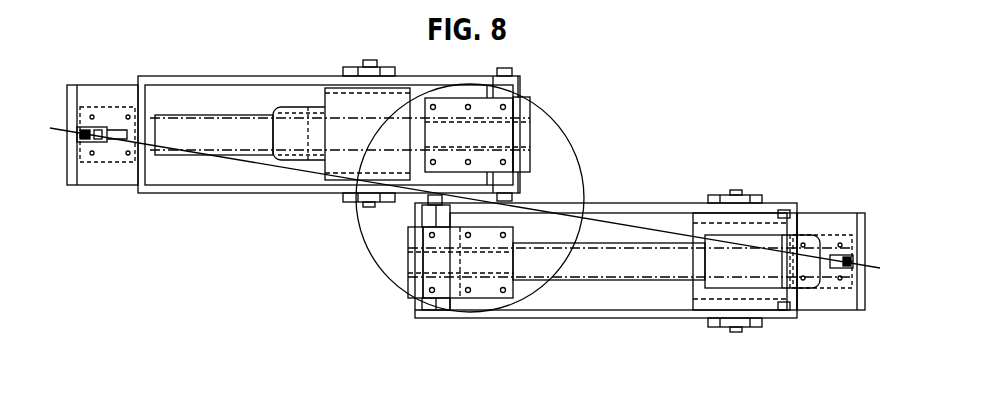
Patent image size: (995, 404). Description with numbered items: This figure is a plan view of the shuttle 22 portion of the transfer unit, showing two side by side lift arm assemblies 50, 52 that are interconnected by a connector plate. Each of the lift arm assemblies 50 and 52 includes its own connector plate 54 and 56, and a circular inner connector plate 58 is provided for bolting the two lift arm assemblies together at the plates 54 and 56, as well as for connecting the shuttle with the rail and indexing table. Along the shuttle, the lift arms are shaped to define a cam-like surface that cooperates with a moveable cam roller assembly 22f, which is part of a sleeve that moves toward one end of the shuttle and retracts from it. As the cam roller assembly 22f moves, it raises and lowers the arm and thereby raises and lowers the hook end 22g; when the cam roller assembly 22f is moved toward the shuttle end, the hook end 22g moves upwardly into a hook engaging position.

The shuttle 22 is at (199, 59).
The cam roller assembly 22f is at (740, 192).
The hook end 22g is at (872, 215).
The lift arm assembly 50 is at (280, 77).
The lift arm assembly 52 is at (623, 318).
The connector plate 54 is at (530, 133).
The connector plate 56 is at (408, 260).
The circular inner connector plate 58 is at (588, 150).